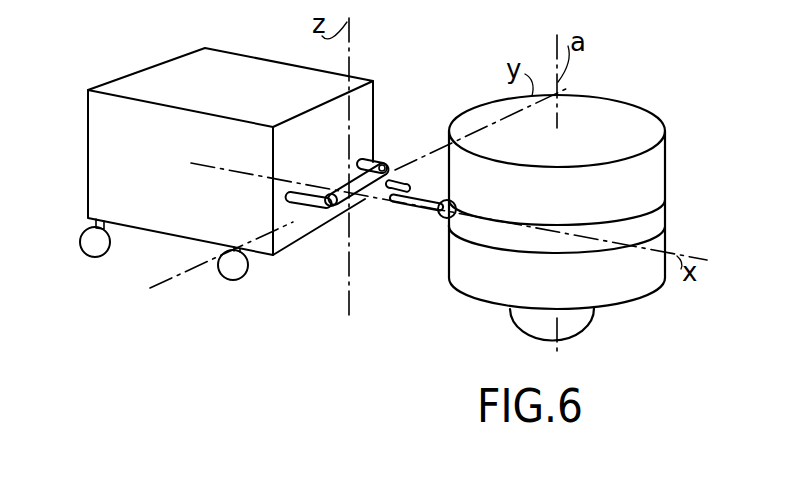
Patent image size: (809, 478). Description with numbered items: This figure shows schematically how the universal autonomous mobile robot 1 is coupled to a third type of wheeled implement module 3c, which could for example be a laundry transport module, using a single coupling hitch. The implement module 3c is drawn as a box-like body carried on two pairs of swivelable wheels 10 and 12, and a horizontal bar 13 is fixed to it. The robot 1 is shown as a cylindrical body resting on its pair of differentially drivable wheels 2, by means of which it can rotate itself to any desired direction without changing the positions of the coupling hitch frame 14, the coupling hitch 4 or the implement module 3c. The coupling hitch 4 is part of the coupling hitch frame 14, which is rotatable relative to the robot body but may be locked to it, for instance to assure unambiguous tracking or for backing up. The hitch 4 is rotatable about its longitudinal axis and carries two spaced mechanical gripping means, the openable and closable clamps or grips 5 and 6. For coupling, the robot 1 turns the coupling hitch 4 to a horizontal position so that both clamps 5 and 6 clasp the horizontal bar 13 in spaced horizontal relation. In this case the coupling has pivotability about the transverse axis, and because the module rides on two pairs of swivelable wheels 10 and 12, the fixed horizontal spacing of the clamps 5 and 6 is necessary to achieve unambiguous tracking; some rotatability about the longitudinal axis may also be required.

The implement module 3c is at (177, 156).
The swivelable wheels 12 is at (92, 252).
The swivelable wheels 10 is at (224, 276).
The coupling clamp 5 is at (328, 207).
The coupling hitch 4 is at (380, 207).
The horizontal bar 13 is at (370, 160).
The coupling clamp 6 is at (389, 180).
The autonomous mobile robot 1 is at (583, 207).
The coupling hitch frame 14 is at (664, 204).
The differentially drivable wheels 2 is at (599, 329).